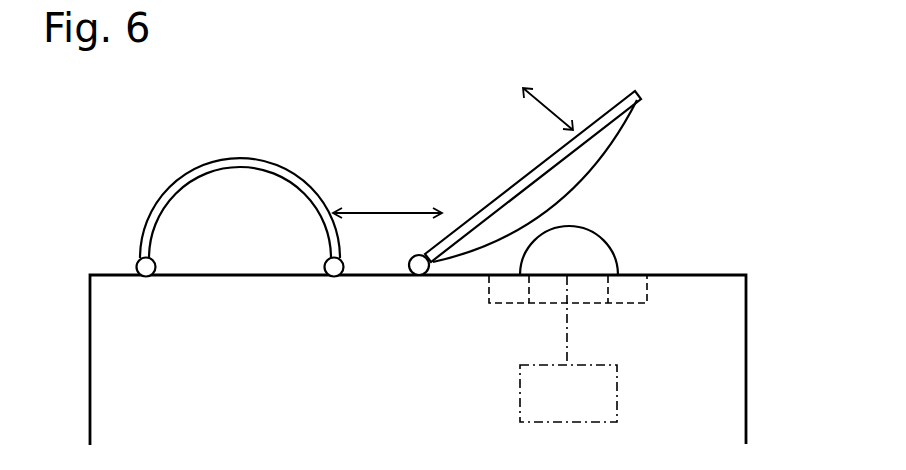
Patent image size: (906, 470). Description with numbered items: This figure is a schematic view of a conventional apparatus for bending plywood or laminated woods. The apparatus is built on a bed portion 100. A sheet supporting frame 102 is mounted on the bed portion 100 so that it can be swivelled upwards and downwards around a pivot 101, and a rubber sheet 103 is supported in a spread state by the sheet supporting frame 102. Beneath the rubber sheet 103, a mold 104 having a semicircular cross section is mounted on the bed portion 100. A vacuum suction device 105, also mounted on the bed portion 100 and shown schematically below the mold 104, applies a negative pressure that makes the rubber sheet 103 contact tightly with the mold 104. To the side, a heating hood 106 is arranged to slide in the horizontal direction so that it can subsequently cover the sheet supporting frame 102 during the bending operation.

The bed portion 100 is at (728, 352).
The pivot 101 is at (416, 276).
The sheet supporting frame 102 is at (600, 119).
The rubber sheet 103 is at (616, 149).
The mold 104 is at (613, 253).
The vacuum suction device 105 is at (627, 373).
The heating hood 106 is at (160, 207).